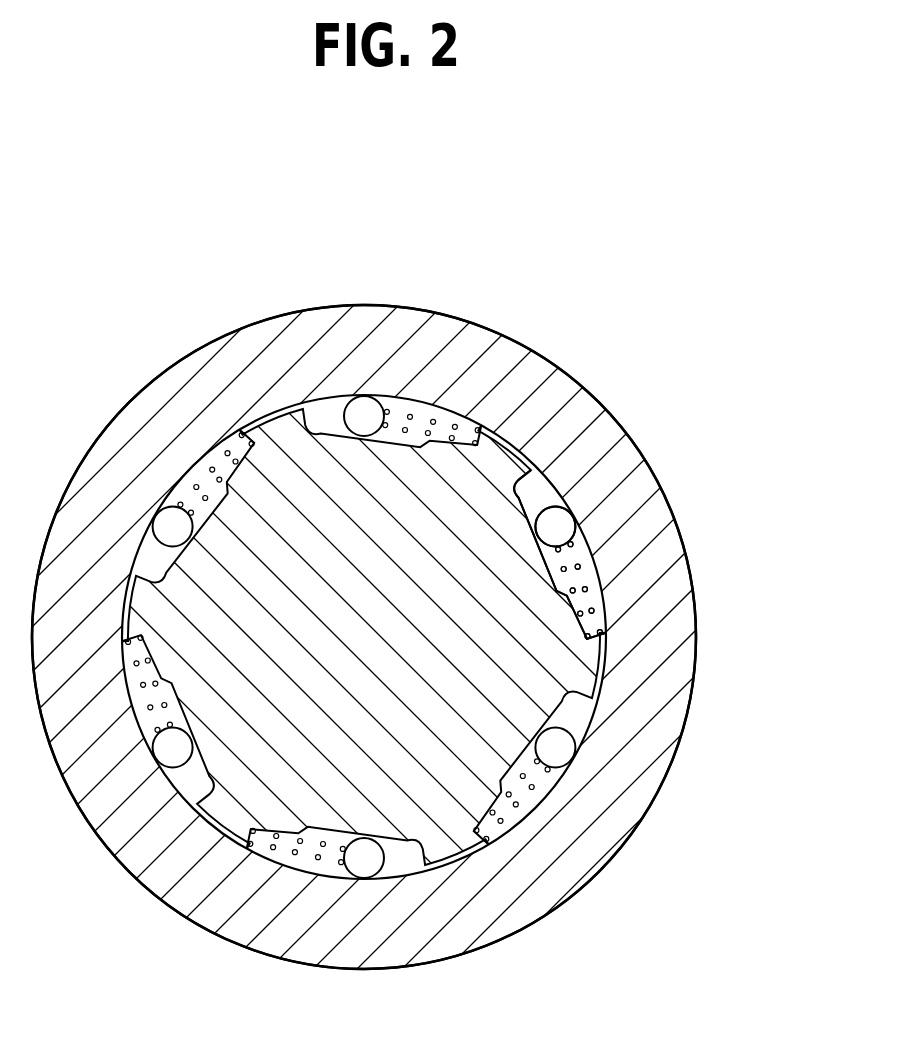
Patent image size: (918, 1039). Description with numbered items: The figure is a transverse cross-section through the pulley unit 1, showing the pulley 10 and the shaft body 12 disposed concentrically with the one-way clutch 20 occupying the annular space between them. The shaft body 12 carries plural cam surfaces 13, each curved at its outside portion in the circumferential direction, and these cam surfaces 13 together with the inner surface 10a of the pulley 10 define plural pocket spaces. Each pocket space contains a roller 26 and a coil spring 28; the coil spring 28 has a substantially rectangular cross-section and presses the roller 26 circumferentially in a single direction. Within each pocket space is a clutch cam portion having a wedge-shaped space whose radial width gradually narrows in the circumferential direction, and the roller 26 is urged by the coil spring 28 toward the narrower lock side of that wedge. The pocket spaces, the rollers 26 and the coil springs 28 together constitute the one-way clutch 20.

The pulley unit 1 is at (623, 229).
The pulley 10 is at (405, 325).
The inner surface of the pulley 10a is at (522, 448).
The shaft body 12 is at (285, 433).
The cam surface 13 is at (593, 540).
The one-way clutch 20 is at (576, 481).
The roller 26 is at (556, 526).
The coil spring 28 is at (593, 583).